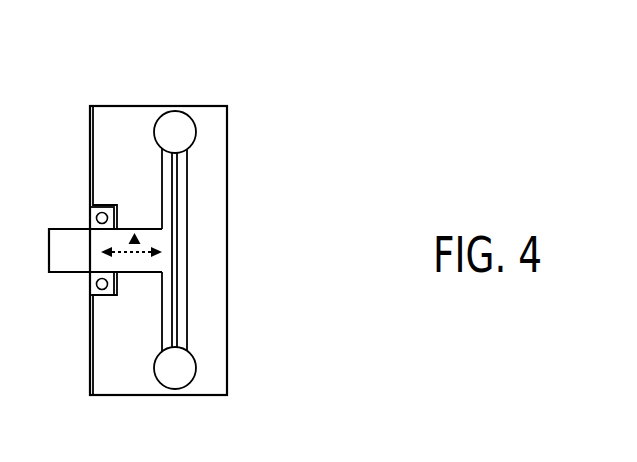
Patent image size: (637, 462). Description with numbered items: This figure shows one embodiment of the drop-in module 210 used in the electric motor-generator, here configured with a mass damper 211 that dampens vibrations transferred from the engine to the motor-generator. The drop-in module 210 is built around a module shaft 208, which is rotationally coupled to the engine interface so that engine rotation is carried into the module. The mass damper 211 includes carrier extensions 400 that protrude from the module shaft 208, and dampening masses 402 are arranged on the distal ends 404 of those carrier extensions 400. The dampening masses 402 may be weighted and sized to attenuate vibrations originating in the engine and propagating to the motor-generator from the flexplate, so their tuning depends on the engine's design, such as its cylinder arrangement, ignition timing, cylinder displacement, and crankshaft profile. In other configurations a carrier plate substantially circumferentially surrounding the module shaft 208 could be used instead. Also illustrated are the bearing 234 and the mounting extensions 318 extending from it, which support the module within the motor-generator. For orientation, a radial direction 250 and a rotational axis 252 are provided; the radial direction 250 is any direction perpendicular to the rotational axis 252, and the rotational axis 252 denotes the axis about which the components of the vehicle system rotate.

The drop-in module 210 is at (253, 73).
The mass damper 211 is at (210, 197).
The mounting extensions 318 is at (96, 147).
The bearing 234 is at (102, 206).
The module shaft 208 is at (65, 240).
The carrier extensions 400 is at (181, 212).
The dampening masses 402 is at (176, 128).
The distal ends 404 is at (200, 152).
The radial direction 250 is at (138, 245).
The rotational axis 252 is at (125, 256).